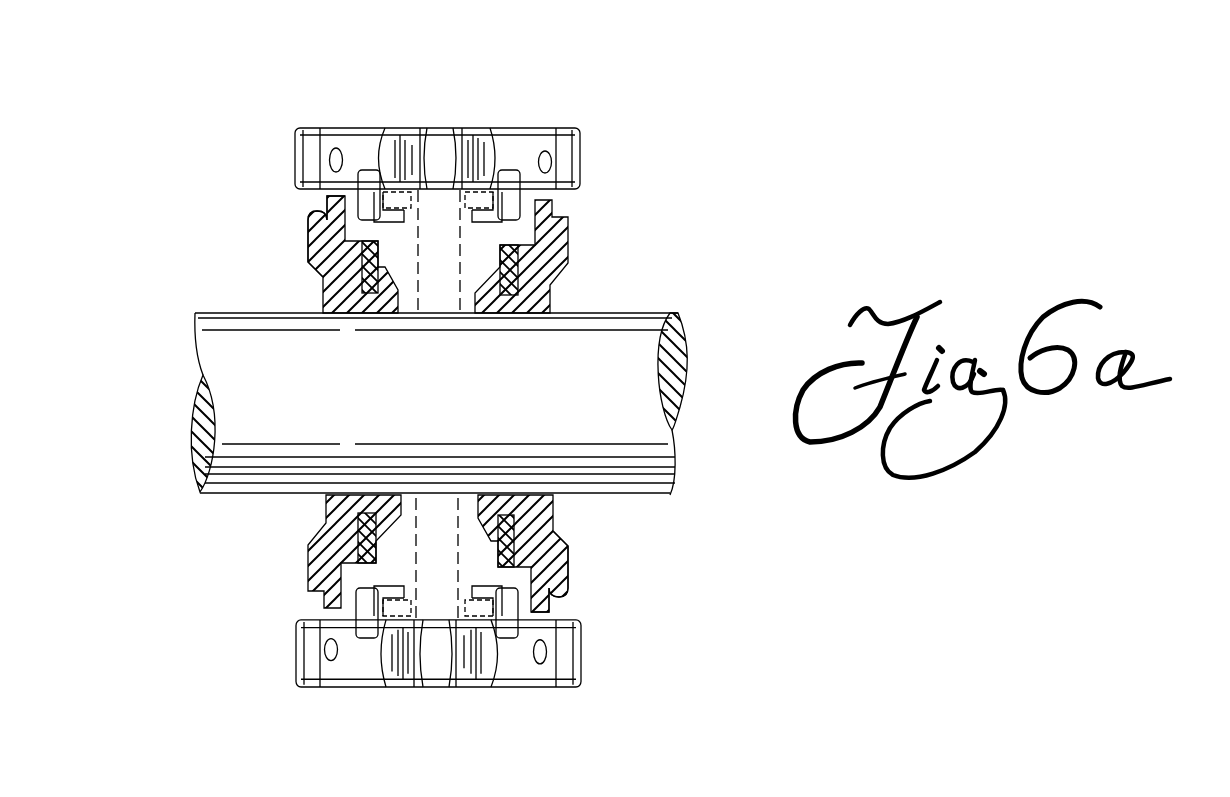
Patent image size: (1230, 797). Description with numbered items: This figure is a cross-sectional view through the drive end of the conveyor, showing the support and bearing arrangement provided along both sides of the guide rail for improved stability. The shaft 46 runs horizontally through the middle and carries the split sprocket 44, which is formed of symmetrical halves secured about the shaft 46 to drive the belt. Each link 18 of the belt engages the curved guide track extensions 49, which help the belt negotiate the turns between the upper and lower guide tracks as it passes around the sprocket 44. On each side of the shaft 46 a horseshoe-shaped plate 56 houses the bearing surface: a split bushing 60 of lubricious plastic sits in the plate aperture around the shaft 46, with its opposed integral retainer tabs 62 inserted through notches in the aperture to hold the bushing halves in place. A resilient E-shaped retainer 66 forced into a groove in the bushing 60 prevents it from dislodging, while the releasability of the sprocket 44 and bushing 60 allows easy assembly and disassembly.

The link 18 is at (527, 128).
The split sprocket 44 is at (437, 177).
The shaft 46 is at (622, 377).
The curved guide track extensions 49 is at (372, 127).
The horseshoe-shaped plate 56 is at (553, 203).
The split bushing 60 is at (337, 293).
The retainer tabs 62 is at (312, 222).
The E-shaped retainer 66 is at (510, 270).